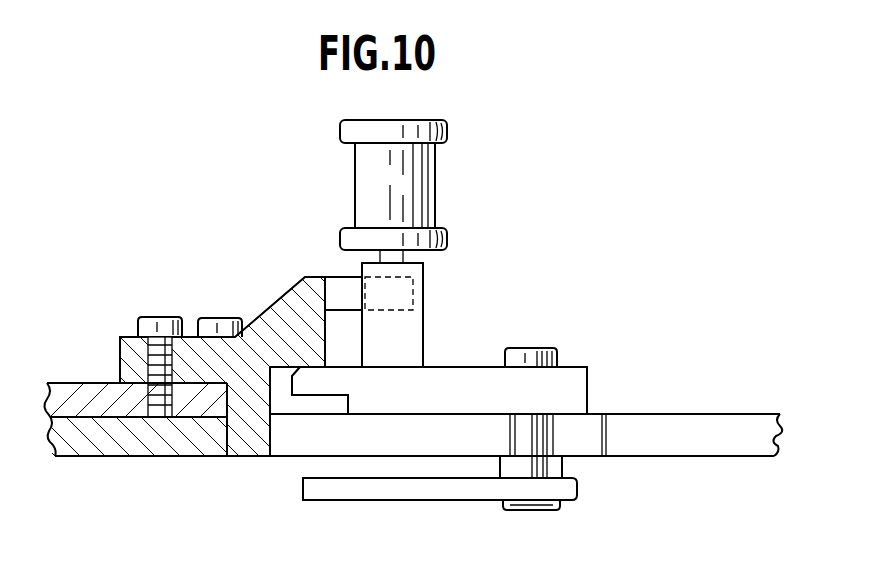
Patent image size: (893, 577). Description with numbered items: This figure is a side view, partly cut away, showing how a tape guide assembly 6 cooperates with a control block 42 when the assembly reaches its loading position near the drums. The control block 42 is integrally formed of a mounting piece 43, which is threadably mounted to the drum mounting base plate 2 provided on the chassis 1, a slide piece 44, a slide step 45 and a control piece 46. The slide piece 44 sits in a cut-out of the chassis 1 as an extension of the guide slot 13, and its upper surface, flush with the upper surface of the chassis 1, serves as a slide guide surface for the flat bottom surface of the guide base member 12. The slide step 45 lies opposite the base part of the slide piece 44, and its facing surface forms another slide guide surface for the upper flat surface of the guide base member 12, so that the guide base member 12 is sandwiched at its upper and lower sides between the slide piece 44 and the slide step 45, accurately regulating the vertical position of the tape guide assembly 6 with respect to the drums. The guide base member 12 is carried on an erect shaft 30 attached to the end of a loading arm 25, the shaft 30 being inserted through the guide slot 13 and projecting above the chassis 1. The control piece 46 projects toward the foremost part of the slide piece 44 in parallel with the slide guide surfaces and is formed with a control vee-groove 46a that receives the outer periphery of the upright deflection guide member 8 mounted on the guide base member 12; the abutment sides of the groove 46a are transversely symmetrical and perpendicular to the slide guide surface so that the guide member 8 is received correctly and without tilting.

The chassis 1 is at (704, 422).
The drum mounting base plate 2 is at (190, 405).
The tape guide assembly 6 is at (495, 380).
The deflection guide member 8 is at (428, 183).
The guide base member 12 is at (473, 380).
The guide slot 13 is at (757, 420).
The loading arm 25 is at (430, 492).
The erect shaft 30 is at (530, 470).
The control block 42 is at (236, 335).
The mounting piece 43 is at (191, 350).
The slide piece 44 is at (322, 438).
The slide step 45 is at (268, 325).
The control piece 46 is at (332, 303).
The control vee-groove 46a is at (352, 282).